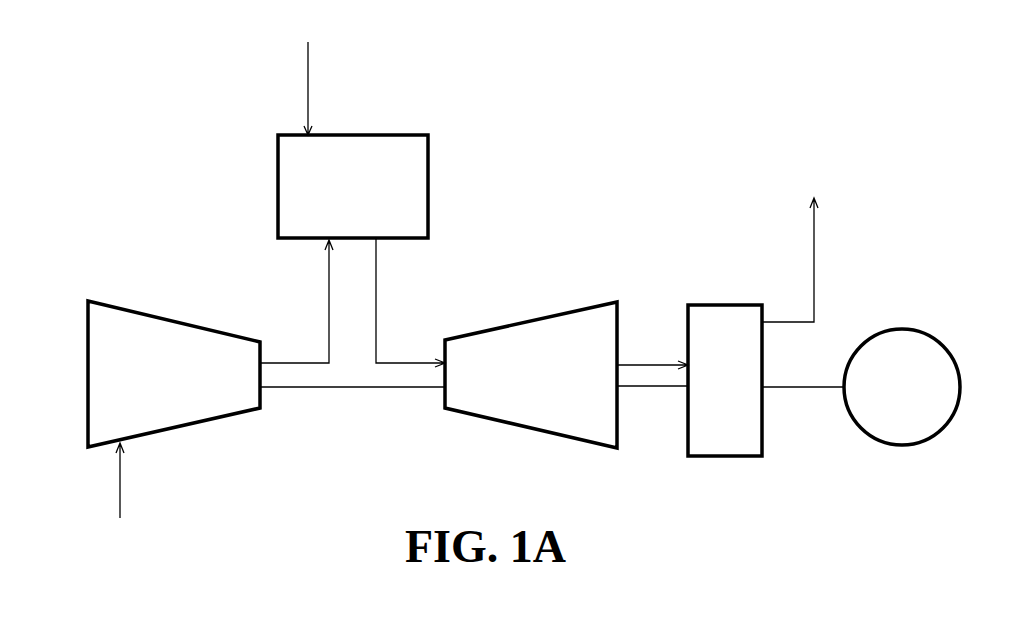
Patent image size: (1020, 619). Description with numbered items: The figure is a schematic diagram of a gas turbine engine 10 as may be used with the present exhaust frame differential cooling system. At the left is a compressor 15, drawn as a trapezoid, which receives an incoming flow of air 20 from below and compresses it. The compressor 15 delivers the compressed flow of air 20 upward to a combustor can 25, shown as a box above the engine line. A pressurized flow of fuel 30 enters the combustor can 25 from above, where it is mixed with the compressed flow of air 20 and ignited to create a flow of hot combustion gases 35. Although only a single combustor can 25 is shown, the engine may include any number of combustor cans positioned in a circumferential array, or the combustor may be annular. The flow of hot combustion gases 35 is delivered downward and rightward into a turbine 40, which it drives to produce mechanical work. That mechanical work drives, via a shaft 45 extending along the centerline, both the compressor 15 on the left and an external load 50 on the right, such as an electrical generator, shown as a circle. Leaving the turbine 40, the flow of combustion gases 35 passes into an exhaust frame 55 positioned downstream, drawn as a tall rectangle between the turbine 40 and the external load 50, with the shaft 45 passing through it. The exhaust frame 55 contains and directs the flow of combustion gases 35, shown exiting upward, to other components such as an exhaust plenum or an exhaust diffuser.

The gas turbine engine 10 is at (104, 70).
The compressor 15 is at (190, 391).
The flow of air 20 is at (120, 480).
The combustor can 25 is at (375, 199).
The flow of fuel 30 is at (308, 67).
The flow of hot combustion gases 35 is at (377, 283).
The turbine 40 is at (562, 392).
The shaft 45 is at (385, 393).
The external load 50 is at (922, 392).
The exhaust frame 55 is at (745, 391).